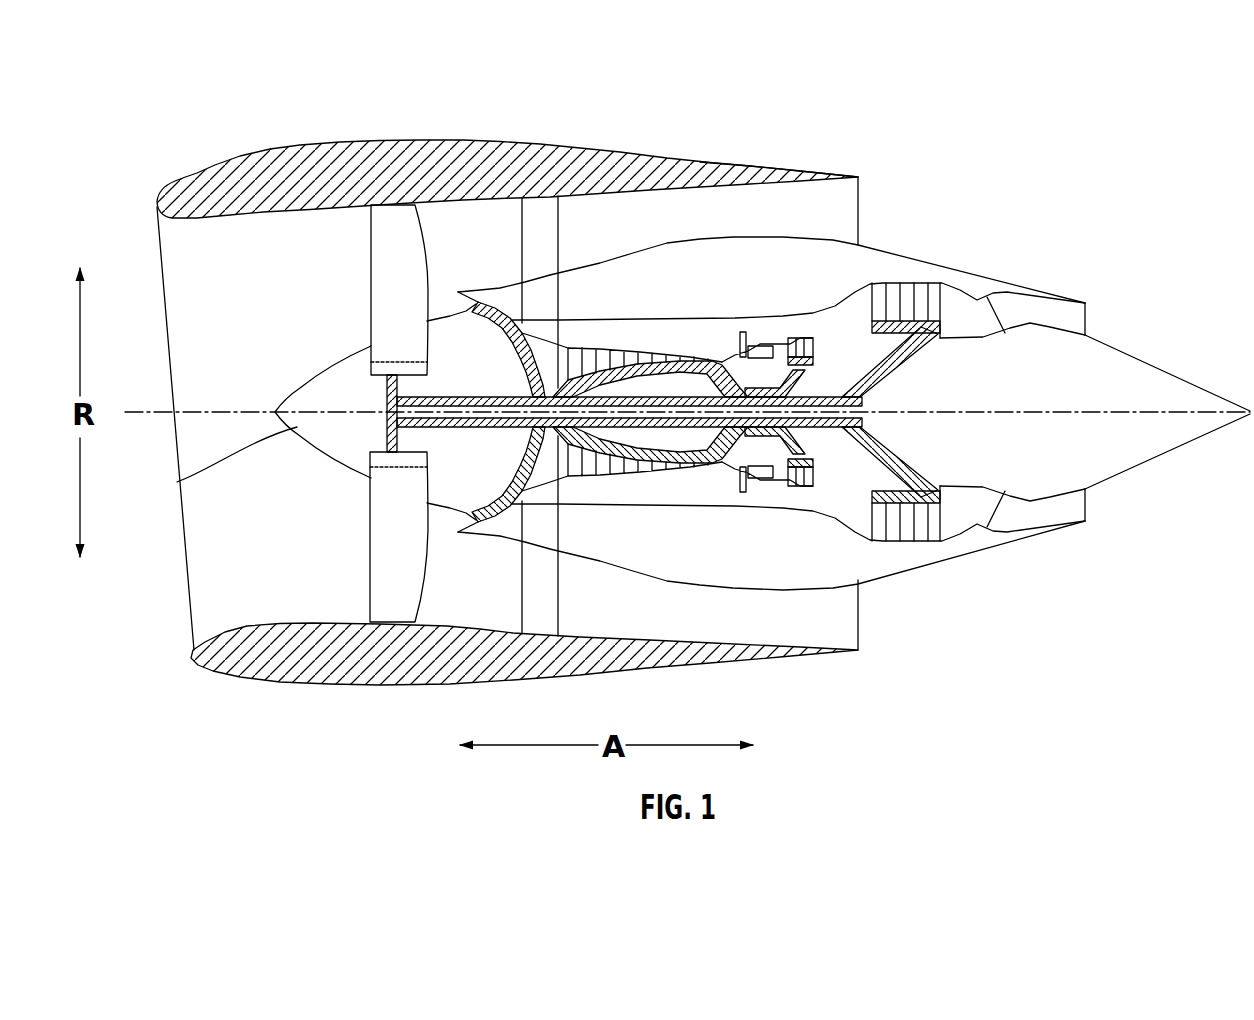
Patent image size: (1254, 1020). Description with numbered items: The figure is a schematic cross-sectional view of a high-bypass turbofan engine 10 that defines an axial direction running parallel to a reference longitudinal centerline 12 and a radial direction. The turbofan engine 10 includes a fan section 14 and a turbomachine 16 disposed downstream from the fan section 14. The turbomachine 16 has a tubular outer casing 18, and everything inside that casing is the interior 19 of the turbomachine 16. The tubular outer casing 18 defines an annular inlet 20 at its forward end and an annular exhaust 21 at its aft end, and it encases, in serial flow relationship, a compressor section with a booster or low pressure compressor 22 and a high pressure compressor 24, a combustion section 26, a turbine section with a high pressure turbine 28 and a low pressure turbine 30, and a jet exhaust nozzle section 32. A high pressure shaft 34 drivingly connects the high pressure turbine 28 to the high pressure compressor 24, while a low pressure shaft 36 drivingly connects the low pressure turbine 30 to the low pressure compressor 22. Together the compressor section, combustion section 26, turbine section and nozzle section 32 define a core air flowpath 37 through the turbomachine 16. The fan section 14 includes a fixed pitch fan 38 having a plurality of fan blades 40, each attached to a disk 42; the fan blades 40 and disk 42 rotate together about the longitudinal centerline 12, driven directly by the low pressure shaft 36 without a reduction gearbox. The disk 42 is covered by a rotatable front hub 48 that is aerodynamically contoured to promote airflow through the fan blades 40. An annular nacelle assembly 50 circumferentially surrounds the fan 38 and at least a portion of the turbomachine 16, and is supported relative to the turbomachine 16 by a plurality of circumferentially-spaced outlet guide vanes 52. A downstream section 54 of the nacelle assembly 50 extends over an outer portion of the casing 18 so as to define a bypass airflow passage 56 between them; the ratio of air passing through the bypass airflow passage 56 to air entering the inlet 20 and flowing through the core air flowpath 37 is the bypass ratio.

The turbofan engine 10 is at (1003, 157).
The longitudinal centerline 12 is at (1028, 412).
The fan section 14 is at (327, 230).
The turbomachine 16 is at (690, 300).
The tubular outer casing 18 is at (745, 588).
The interior 19 is at (860, 270).
The annular inlet 20 is at (458, 531).
The annular exhaust 21 is at (1088, 524).
The low pressure compressor 22 is at (520, 490).
The high pressure compressor 24 is at (588, 470).
The combustion section 26 is at (760, 477).
The high pressure turbine 28 is at (823, 485).
The low pressure turbine 30 is at (943, 540).
The jet exhaust nozzle section 32 is at (1000, 520).
The high pressure shaft 34 is at (788, 381).
The low pressure shaft 36 is at (900, 372).
The core air flowpath 37 is at (542, 468).
The fixed pitch fan 38 is at (333, 465).
The fan blades 40 is at (368, 562).
The disk 42 is at (371, 370).
The front hub 48 is at (177, 482).
The nacelle assembly 50 is at (408, 697).
The outlet guide vanes 52 is at (558, 225).
The downstream section 54 is at (805, 165).
The bypass airflow passage 56 is at (741, 230).